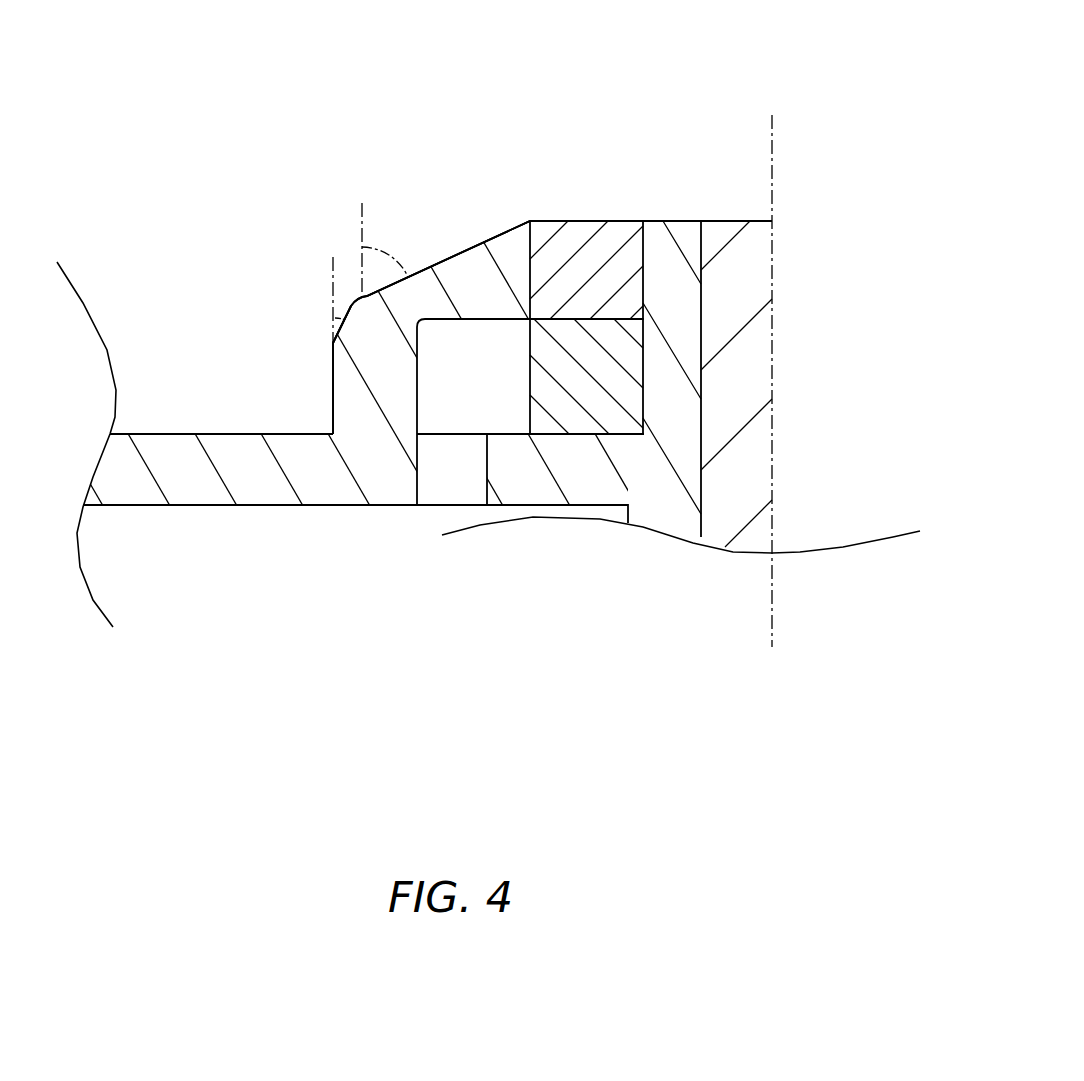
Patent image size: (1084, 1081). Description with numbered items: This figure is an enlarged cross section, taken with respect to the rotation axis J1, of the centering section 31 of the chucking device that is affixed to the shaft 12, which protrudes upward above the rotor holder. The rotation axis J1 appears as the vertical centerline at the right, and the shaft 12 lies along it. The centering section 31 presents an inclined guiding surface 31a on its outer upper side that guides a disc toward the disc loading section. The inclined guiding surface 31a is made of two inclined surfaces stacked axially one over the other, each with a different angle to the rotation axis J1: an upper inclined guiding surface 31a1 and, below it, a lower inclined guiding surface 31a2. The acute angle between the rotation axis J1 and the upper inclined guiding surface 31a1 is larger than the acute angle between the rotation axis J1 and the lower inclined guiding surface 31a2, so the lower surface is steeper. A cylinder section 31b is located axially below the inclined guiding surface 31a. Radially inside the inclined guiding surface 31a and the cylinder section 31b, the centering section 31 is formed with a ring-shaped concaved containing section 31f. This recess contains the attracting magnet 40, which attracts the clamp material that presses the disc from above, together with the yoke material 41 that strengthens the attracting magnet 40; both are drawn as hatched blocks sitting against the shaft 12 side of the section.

The centering section 31 is at (170, 119).
The inclined guiding surface 31a is at (465, 228).
The upper inclined guiding surface 31a1 is at (443, 258).
The lower inclined guiding surface 31a2 is at (340, 336).
The cylinder section 31b is at (332, 387).
The concaved containing section 31f is at (502, 400).
The attracting magnet 40 is at (587, 262).
The yoke material 41 is at (583, 397).
The shaft 12 is at (755, 375).
The rotation axis J1 is at (773, 168).